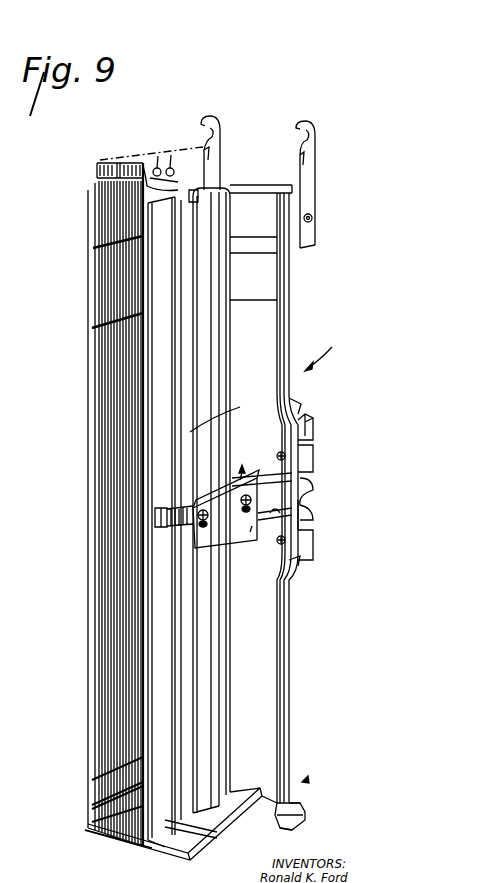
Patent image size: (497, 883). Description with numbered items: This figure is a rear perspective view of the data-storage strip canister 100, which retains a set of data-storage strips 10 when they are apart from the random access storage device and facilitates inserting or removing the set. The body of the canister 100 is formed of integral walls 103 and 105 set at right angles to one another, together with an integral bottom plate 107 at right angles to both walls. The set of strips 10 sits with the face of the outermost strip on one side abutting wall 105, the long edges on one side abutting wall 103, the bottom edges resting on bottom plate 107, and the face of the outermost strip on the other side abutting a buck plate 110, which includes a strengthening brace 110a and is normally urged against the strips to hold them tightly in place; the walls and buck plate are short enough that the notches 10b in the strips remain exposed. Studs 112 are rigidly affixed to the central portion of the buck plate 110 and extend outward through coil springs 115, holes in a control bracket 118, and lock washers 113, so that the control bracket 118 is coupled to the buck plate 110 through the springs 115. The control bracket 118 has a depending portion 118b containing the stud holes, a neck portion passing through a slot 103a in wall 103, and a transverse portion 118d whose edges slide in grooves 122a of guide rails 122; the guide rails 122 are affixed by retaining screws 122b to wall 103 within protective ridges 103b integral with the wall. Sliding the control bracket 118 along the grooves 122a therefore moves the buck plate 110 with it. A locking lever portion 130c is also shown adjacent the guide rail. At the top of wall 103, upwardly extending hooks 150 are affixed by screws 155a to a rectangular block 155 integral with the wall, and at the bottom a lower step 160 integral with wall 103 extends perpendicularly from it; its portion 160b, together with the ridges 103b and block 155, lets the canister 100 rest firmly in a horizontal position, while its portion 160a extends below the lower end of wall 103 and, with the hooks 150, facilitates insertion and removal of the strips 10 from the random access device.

The data-storage strip 10 is at (117, 392).
The hanging clips 10b is at (161, 157).
The data-storage strip canister 100 is at (325, 352).
The wall 103 is at (290, 642).
The slot 103a is at (300, 518).
The protective ridges 103b is at (298, 408).
The wall 105 is at (85, 613).
The bottom plate 107 is at (178, 843).
The buck plate 110 is at (160, 455).
The strengthening brace 110a is at (231, 416).
The studs 112 is at (259, 537).
The lock washers 113 is at (243, 467).
The coil springs 115 is at (153, 520).
The control bracket 118 is at (205, 548).
The depending portion 118b is at (210, 524).
The transverse portion 118d is at (268, 482).
The guide rails 122 is at (312, 455).
The grooves 122a is at (312, 497).
The retaining screws 122b is at (290, 455).
The block 130c is at (318, 422).
The upwardly extending hooks 150 is at (222, 123).
The rectangular block 155 is at (252, 192).
The screws 155a is at (313, 217).
The lower step 160 is at (304, 781).
The step portion 160a is at (283, 817).
The step portion 160b is at (300, 793).